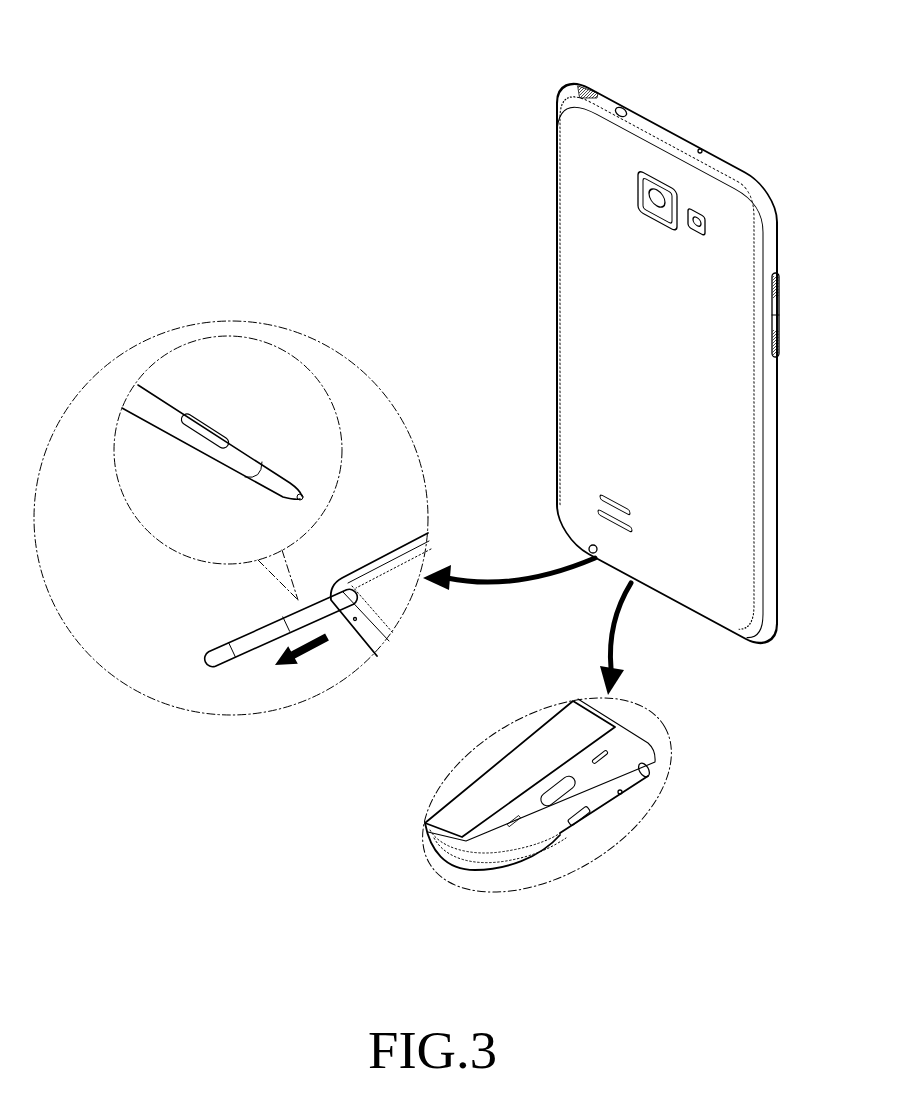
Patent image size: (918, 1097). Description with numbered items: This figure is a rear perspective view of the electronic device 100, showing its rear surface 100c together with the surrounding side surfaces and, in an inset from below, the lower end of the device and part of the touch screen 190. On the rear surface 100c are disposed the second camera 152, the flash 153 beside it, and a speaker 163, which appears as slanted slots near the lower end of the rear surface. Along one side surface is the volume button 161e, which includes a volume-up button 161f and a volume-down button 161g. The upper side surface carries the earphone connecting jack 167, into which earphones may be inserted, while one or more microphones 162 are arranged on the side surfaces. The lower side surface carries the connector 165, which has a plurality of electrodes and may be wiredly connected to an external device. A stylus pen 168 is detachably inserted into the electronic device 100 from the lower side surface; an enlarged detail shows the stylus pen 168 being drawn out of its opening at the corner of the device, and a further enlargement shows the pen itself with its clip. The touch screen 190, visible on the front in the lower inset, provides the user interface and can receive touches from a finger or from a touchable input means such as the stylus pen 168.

The electronic device 100 is at (555, 55).
The rear surface 100c is at (580, 347).
The second camera 152 is at (638, 191).
The flash 153 is at (707, 226).
The volume button 161e is at (793, 272).
The volume-up button 161f is at (777, 301).
The volume-down button 161g is at (777, 328).
The microphone 162 is at (701, 150).
The speaker 163 is at (600, 495).
The connector 165 is at (582, 825).
The earphone connecting jack 167 is at (623, 107).
The stylus pen 168 is at (593, 545).
The touch screen 190 is at (478, 760).